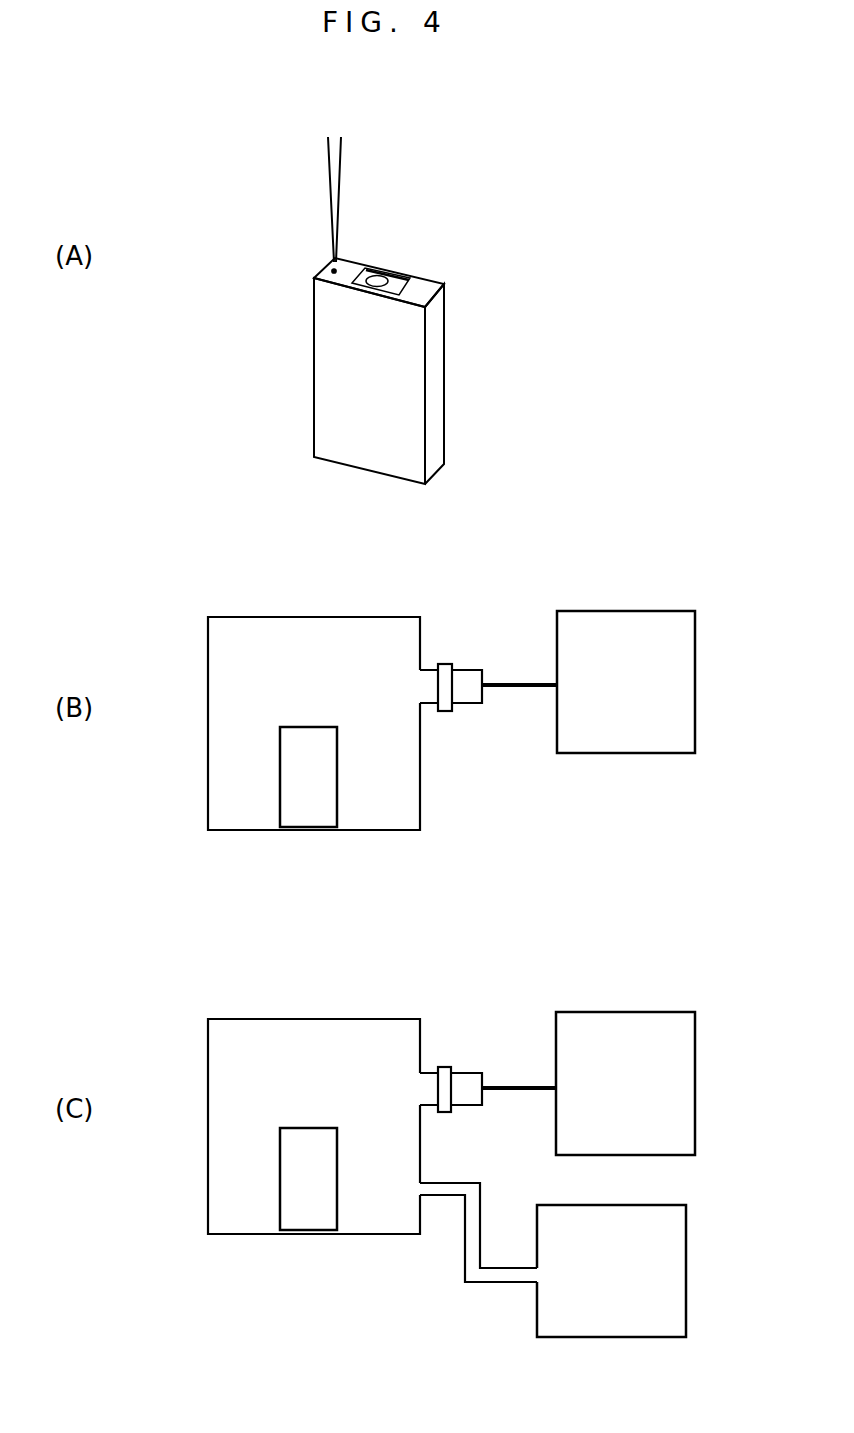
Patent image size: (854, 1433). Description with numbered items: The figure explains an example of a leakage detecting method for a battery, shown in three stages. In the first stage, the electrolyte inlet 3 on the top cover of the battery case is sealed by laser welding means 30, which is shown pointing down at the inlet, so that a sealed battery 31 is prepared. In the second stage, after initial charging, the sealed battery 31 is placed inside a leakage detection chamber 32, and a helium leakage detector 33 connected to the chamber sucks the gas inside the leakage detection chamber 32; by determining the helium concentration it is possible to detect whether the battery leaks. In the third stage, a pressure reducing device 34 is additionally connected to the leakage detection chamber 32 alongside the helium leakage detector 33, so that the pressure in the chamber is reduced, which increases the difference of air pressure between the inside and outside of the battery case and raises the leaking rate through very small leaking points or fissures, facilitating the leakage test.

The electrolyte inlet 3 is at (330, 270).
The laser welding means 30 is at (343, 183).
The sealed battery 31 is at (438, 357).
The leakage detection chamber 32 is at (208, 657).
The helium leakage detector 33 is at (633, 608).
The pressure reducing device 34 is at (675, 1267).